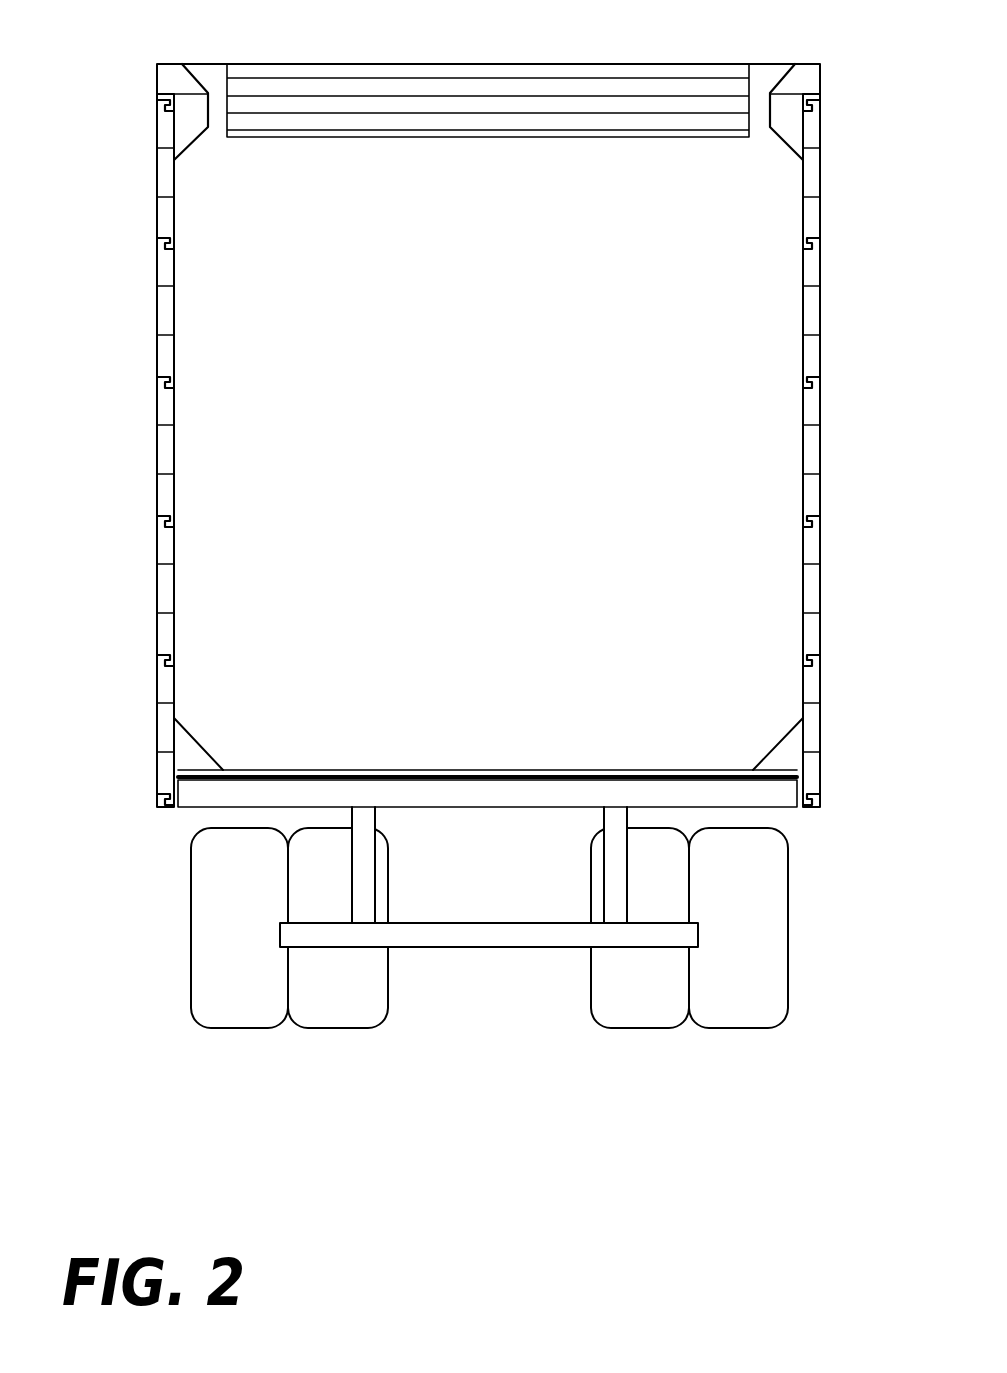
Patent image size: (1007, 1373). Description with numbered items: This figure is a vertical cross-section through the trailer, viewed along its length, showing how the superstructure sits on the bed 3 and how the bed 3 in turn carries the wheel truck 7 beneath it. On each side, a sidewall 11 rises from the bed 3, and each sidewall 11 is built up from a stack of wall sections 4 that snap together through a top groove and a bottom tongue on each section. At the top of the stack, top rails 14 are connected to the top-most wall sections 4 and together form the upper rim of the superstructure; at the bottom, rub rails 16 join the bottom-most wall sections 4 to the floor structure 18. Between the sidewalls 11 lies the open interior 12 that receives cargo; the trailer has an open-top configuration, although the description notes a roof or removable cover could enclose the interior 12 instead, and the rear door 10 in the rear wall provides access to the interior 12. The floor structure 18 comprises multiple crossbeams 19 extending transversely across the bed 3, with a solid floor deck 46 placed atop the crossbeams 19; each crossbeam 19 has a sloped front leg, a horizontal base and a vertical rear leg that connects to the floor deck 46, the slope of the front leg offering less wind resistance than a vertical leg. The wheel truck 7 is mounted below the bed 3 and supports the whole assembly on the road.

The rear door 10 is at (555, 64).
The sidewalls 11 is at (496, 452).
The wall sections 4 is at (174, 236).
The top rails 14 is at (190, 143).
The interior 12 is at (530, 435).
The bed 3 is at (487, 765).
The floor structure 18 is at (433, 764).
The floor deck 46 is at (635, 777).
The crossbeams 19 is at (470, 792).
The rub rails 16 is at (200, 738).
The wheel truck 7 is at (180, 928).